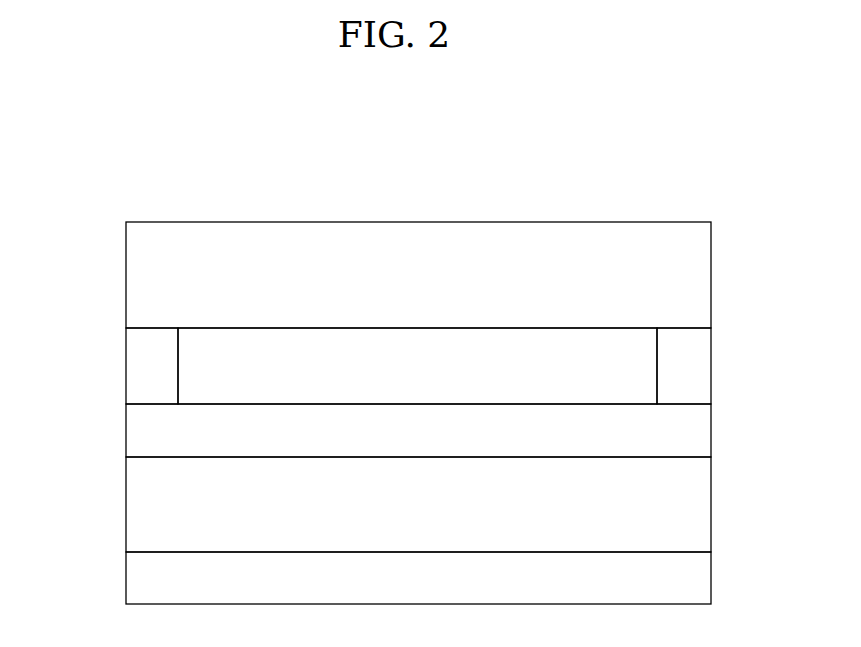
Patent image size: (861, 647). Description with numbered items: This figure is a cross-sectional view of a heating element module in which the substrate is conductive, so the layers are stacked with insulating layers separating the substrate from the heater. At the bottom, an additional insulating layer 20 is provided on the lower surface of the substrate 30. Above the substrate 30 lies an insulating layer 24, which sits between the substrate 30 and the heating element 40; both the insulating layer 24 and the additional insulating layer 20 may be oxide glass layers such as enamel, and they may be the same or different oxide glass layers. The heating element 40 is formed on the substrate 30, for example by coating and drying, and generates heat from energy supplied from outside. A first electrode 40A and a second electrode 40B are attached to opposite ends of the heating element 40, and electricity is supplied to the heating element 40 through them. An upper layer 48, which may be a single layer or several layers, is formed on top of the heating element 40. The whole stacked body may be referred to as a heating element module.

The additional insulating layer 20 is at (702, 582).
The substrate 30 is at (702, 507).
The insulating layer 24 is at (702, 434).
The heating element 40 is at (415, 348).
The first electrode 40A is at (135, 366).
The second electrode 40B is at (702, 367).
The upper layer 48 is at (702, 279).